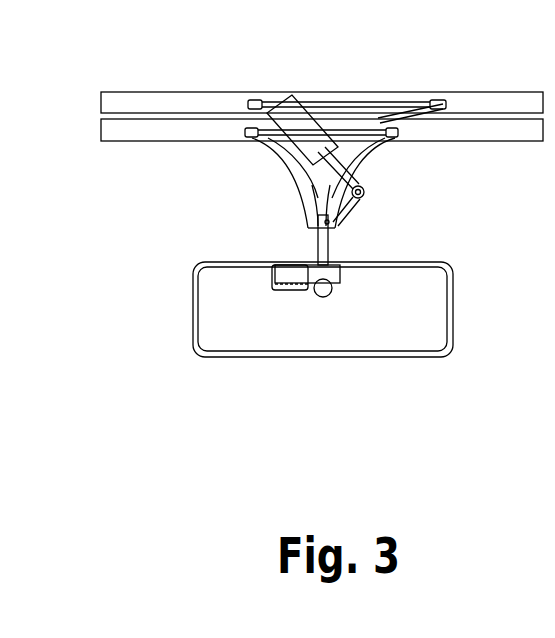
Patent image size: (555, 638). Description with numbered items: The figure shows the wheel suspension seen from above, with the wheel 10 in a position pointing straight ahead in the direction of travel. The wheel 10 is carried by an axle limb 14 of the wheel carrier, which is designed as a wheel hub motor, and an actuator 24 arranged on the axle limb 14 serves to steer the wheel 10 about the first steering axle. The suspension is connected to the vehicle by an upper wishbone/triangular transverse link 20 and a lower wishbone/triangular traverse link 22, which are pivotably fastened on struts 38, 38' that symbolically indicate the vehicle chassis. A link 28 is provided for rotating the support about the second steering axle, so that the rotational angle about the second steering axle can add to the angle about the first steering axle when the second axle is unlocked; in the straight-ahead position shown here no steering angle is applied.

The wheel 10 is at (231, 337).
The axle limb 14 is at (316, 265).
The upper wishbone/triangular transverse link 20 is at (366, 132).
The lower wishbone/triangular traverse link 22 is at (414, 108).
The actuator 24 is at (290, 272).
The link 28 is at (350, 173).
The strut 38 is at (322, 161).
The strut 38' is at (323, 72).